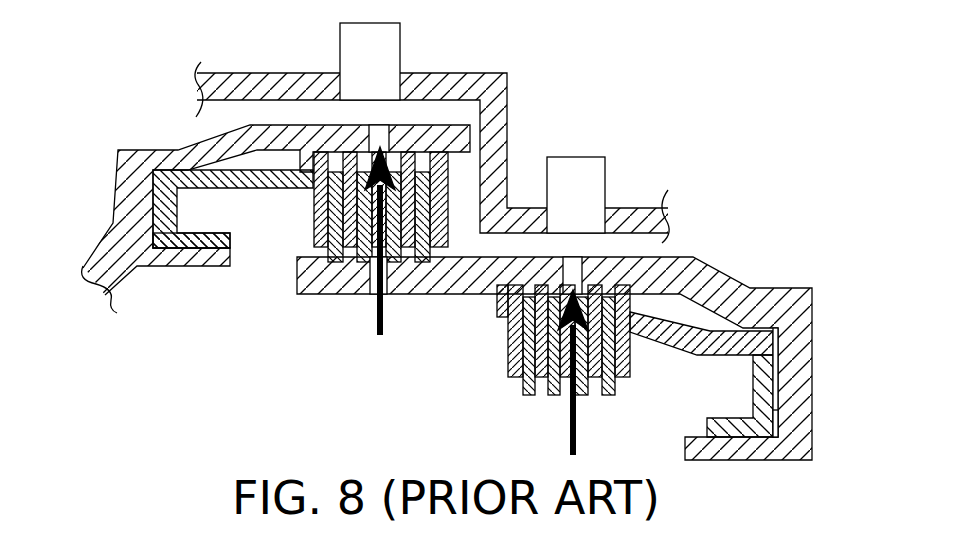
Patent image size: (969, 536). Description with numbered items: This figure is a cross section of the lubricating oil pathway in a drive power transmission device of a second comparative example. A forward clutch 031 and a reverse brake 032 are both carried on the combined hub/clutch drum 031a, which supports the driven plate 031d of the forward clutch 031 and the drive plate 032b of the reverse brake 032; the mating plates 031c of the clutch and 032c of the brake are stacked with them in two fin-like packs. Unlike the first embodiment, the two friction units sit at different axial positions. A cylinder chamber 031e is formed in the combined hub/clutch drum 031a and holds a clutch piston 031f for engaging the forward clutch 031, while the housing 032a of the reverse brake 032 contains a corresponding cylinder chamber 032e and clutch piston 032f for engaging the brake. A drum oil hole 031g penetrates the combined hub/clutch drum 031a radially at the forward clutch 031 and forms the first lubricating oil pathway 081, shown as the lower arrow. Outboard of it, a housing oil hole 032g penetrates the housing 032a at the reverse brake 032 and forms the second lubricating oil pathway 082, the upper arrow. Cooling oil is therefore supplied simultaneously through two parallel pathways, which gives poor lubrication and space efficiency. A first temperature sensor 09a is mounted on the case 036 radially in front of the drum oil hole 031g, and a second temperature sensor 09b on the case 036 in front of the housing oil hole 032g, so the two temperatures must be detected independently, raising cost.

The first temperature sensor 09a is at (592, 173).
The second temperature sensor 09b is at (348, 37).
The forward clutch 031 is at (589, 340).
The combined hub/clutch drum 031a is at (713, 277).
The fins of first heat sink 031c is at (552, 397).
The driven plate 031d is at (625, 360).
The cylinder chamber 031e is at (776, 345).
The clutch piston 031f is at (767, 410).
The drum oil hole 031g is at (575, 273).
The reverse brake 032 is at (307, 195).
The housing 032a is at (263, 132).
The drive plate 032b is at (362, 232).
The fins of second heat sink 032c is at (430, 245).
The side wall sheet of second heat sink 032e is at (157, 198).
The bottom sheet of second heat sink 032f is at (153, 233).
The housing oil hole 032g is at (382, 133).
The case 036 is at (495, 100).
The first lubricating oil pathway 081 is at (571, 436).
The second lubricating oil pathway 082 is at (377, 338).